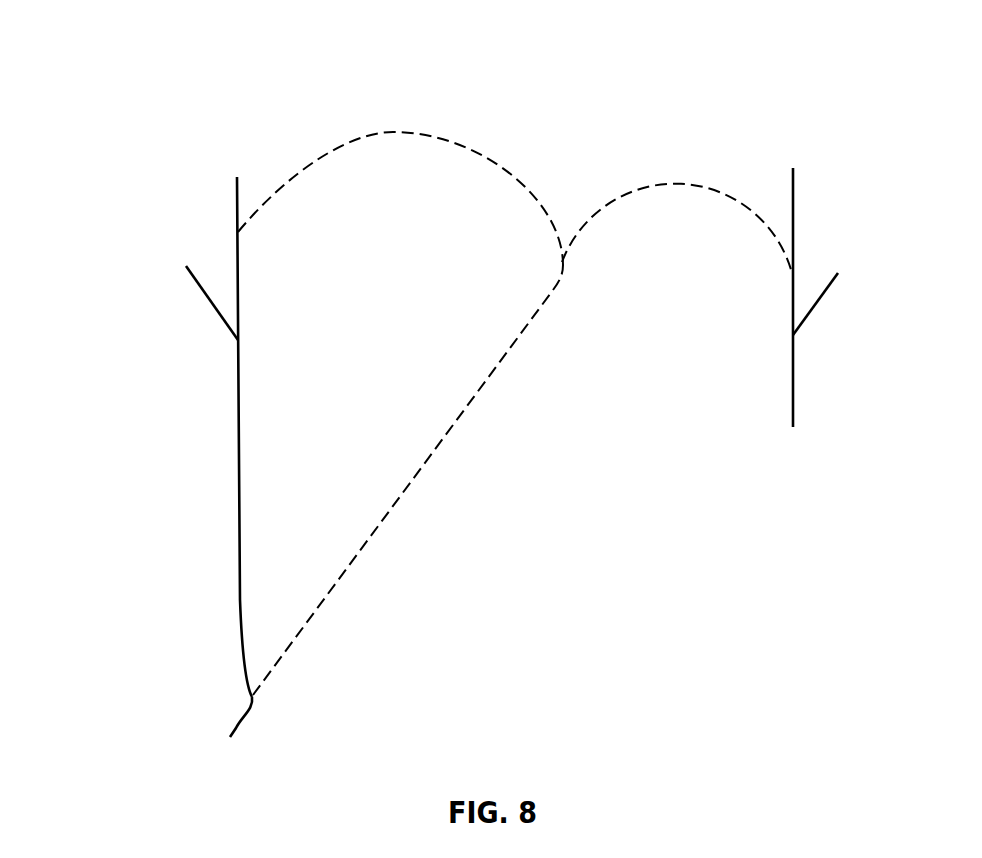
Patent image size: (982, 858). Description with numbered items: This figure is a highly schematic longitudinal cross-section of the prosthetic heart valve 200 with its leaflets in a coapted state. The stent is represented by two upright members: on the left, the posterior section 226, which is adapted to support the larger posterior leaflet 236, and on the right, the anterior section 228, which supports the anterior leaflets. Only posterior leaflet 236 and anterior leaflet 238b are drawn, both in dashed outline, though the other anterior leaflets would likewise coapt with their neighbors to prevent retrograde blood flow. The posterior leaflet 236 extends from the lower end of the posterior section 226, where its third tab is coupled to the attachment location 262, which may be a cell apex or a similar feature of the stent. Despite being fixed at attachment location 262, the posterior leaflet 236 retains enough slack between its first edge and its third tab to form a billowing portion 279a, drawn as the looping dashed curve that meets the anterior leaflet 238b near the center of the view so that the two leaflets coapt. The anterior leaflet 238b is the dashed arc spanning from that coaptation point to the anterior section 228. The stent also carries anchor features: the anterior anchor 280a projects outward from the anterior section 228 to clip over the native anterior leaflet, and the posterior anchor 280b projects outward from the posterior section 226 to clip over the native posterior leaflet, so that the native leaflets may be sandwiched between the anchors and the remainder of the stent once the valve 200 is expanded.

The prosthetic heart valve 200 is at (147, 55).
The posterior section 226 is at (186, 694).
The anterior section 228 is at (828, 445).
The posterior leaflet 236 is at (302, 633).
The anterior leaflet 238b is at (686, 187).
The attachment location 262 is at (230, 735).
The billowing portion 279a is at (548, 207).
The anterior anchor 280a is at (813, 310).
The posterior anchor 280b is at (212, 305).